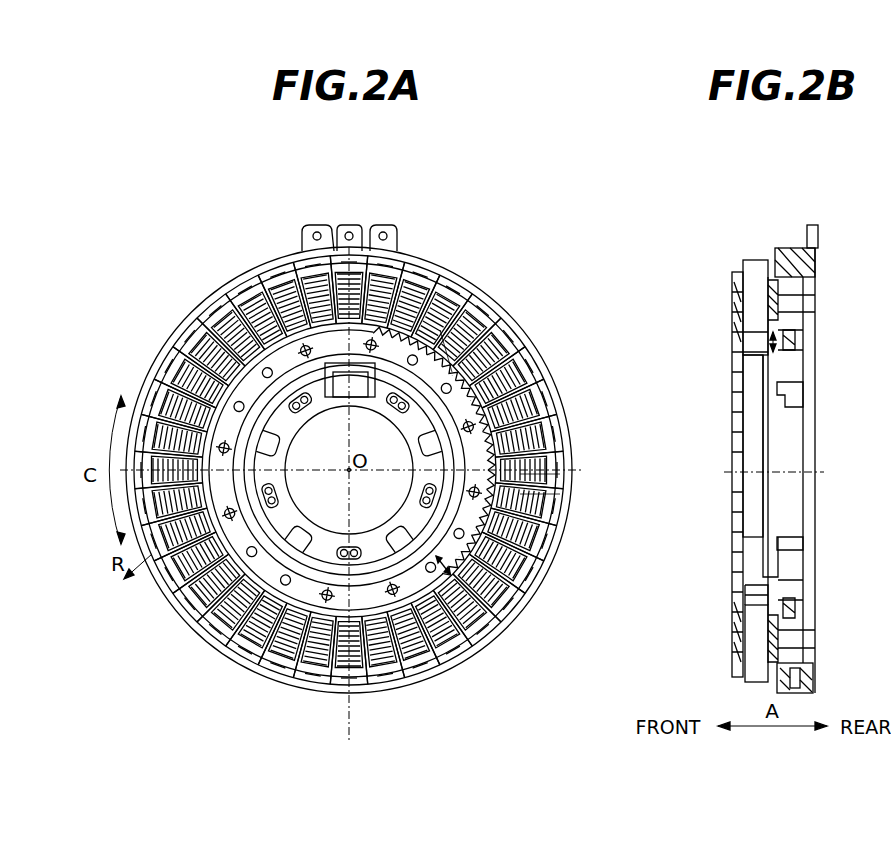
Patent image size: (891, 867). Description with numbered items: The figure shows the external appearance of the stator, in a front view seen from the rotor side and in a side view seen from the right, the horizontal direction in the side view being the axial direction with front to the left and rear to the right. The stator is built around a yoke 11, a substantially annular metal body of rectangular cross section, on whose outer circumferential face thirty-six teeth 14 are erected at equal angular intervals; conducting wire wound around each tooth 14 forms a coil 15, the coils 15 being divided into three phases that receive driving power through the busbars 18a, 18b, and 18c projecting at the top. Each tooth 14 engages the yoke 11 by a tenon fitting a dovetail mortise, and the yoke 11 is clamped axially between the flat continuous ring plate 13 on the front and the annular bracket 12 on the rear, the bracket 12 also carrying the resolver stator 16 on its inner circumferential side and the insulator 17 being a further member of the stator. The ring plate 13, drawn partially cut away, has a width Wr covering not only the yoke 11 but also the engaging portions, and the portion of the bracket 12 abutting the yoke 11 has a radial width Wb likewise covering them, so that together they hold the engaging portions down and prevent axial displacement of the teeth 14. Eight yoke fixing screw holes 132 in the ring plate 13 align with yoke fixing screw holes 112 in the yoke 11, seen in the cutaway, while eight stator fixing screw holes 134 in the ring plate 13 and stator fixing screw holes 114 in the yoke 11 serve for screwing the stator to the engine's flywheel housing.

In FIG. 2A, the yoke 11 is at (388, 382).
In FIG. 2B, the yoke 11 is at (756, 362).
In FIG. 2A, the bracket 12 is at (424, 292).
In FIG. 2B, the bracket 12 is at (802, 360).
In FIG. 2A, the ring plate 13 is at (266, 302).
In FIG. 2B, the ring plate 13 is at (740, 418).
In FIG. 2A, the tooth 14 is at (455, 372).
In FIG. 2B, the tooth 14 is at (758, 262).
In FIG. 2A, the coil 15 is at (557, 418).
In FIG. 2A, the resolver stator 16 is at (322, 556).
In FIG. 2B, the resolver stator 16 is at (802, 396).
In FIG. 2A, the insulator 17 is at (176, 330).
In FIG. 2A, the busbar 18a is at (316, 224).
In FIG. 2A, the busbar 18b is at (349, 224).
In FIG. 2A, the busbar 18c is at (388, 224).
In FIG. 2A, the yoke fixing screw hole 112 is at (545, 500).
In FIG. 2A, the stator fixing screw hole 114 is at (455, 372).
In FIG. 2A, the yoke fixing screw hole 132 is at (303, 412).
In FIG. 2A, the stator fixing screw hole 134 is at (220, 447).
In FIG. 2B, the radial width Wb is at (798, 345).
In FIG. 2A, the width Wr is at (452, 580).